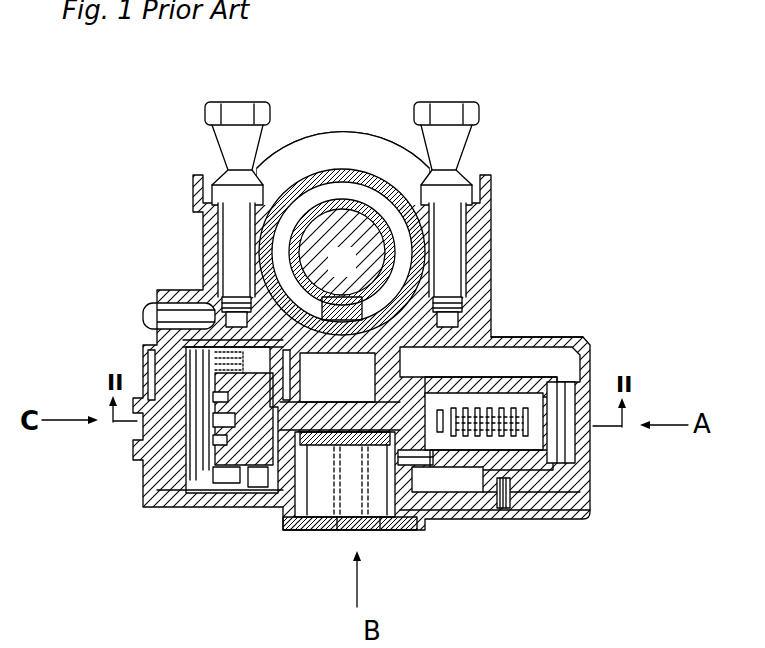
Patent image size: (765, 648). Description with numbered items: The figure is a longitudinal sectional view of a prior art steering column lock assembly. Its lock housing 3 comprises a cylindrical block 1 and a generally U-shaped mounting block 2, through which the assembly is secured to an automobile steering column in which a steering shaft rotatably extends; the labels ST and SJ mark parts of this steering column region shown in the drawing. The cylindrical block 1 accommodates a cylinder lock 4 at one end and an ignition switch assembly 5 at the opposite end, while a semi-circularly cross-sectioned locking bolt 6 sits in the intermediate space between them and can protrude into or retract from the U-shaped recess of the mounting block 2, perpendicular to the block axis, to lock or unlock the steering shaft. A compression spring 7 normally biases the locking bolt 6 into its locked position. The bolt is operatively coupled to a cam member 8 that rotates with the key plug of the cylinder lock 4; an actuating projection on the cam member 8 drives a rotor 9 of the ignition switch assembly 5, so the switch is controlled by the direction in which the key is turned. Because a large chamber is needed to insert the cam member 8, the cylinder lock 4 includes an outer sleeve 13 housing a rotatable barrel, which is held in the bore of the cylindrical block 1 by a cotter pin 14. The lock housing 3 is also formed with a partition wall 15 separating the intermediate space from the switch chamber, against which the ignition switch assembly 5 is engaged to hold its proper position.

The cylindrical block 1 is at (462, 510).
The U-shaped mounting block 2 is at (263, 217).
The lock housing 3 is at (492, 308).
The cylinder lock 4 is at (520, 440).
The ignition switch assembly 5 is at (263, 490).
The locking bolt 6 is at (338, 302).
The compression spring 7 is at (322, 500).
The cam member 8 is at (352, 420).
The rotor 9 is at (242, 502).
The sleeve 13 is at (556, 506).
The cotter pin 14 is at (503, 508).
The partition wall 15 is at (296, 480).
The stator ST is at (325, 222).
The sealing ring SJ is at (360, 183).